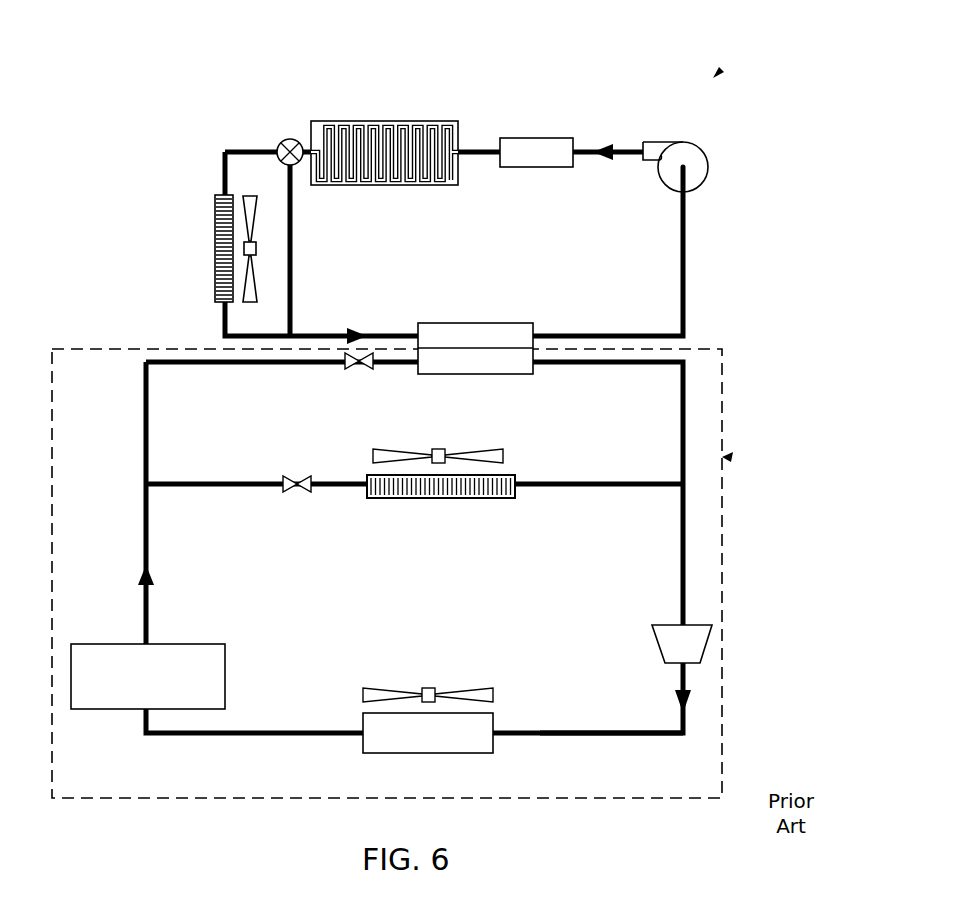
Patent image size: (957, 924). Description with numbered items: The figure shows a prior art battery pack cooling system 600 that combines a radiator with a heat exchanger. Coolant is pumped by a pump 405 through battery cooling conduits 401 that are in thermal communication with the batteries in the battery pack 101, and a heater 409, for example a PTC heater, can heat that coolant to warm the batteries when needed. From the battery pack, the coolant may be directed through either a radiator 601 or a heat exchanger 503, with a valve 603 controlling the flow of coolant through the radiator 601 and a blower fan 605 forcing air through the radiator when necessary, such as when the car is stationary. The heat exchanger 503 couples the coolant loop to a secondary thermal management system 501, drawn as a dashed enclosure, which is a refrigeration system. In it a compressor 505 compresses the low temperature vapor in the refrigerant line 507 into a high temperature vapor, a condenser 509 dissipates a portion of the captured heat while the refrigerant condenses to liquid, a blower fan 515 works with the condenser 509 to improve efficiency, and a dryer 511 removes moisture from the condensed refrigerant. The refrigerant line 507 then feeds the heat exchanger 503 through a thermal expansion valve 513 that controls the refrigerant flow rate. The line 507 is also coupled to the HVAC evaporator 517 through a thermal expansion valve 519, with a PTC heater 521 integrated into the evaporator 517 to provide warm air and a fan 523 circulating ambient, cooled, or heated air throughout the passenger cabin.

The cooling system 600 is at (716, 76).
The secondary thermal management system 501 is at (724, 457).
The battery pack 101 is at (356, 135).
The battery cooling conduits 401 is at (333, 132).
The pump 405 is at (662, 155).
The heater 409 is at (523, 138).
The heat exchanger 503 is at (456, 323).
The compressor 505 is at (656, 635).
The refrigerant line 507 is at (590, 736).
The condenser 509 is at (495, 723).
The dryer 511 is at (199, 644).
The thermal expansion valve 513 is at (352, 368).
The blower fan 515 is at (425, 690).
The HVAC evaporator 517 is at (414, 485).
The thermal expansion valve 519 is at (290, 490).
The PTC heater 521 is at (400, 501).
The fan 523 is at (438, 449).
The radiator 601 is at (222, 292).
The valve 603 is at (279, 143).
The blower fan 605 is at (250, 194).